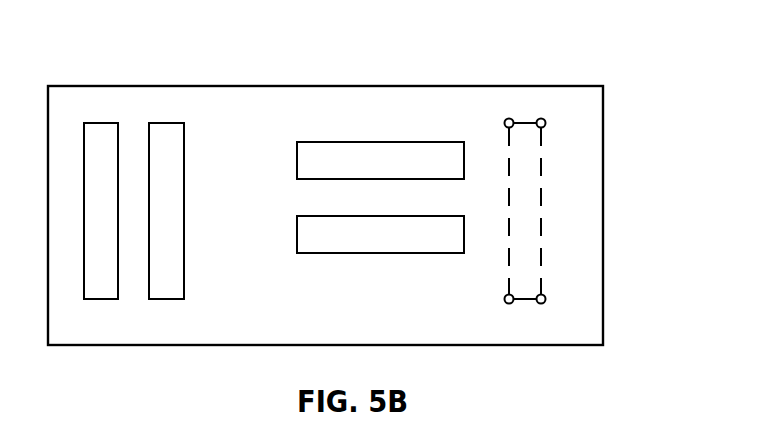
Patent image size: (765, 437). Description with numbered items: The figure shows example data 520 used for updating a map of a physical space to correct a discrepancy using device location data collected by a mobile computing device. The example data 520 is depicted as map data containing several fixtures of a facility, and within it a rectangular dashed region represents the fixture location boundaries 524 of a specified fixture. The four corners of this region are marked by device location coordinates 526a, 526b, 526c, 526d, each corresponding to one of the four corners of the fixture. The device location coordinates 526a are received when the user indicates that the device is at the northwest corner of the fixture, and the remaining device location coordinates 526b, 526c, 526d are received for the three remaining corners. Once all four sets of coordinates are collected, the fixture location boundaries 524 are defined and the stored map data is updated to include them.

The example data 520 is at (103, 86).
The fixture location boundaries 524 is at (543, 167).
The device location coordinates 526a is at (506, 120).
The device location coordinates 526b is at (545, 121).
The device location coordinates 526c is at (544, 303).
The device location coordinates 526d is at (510, 304).